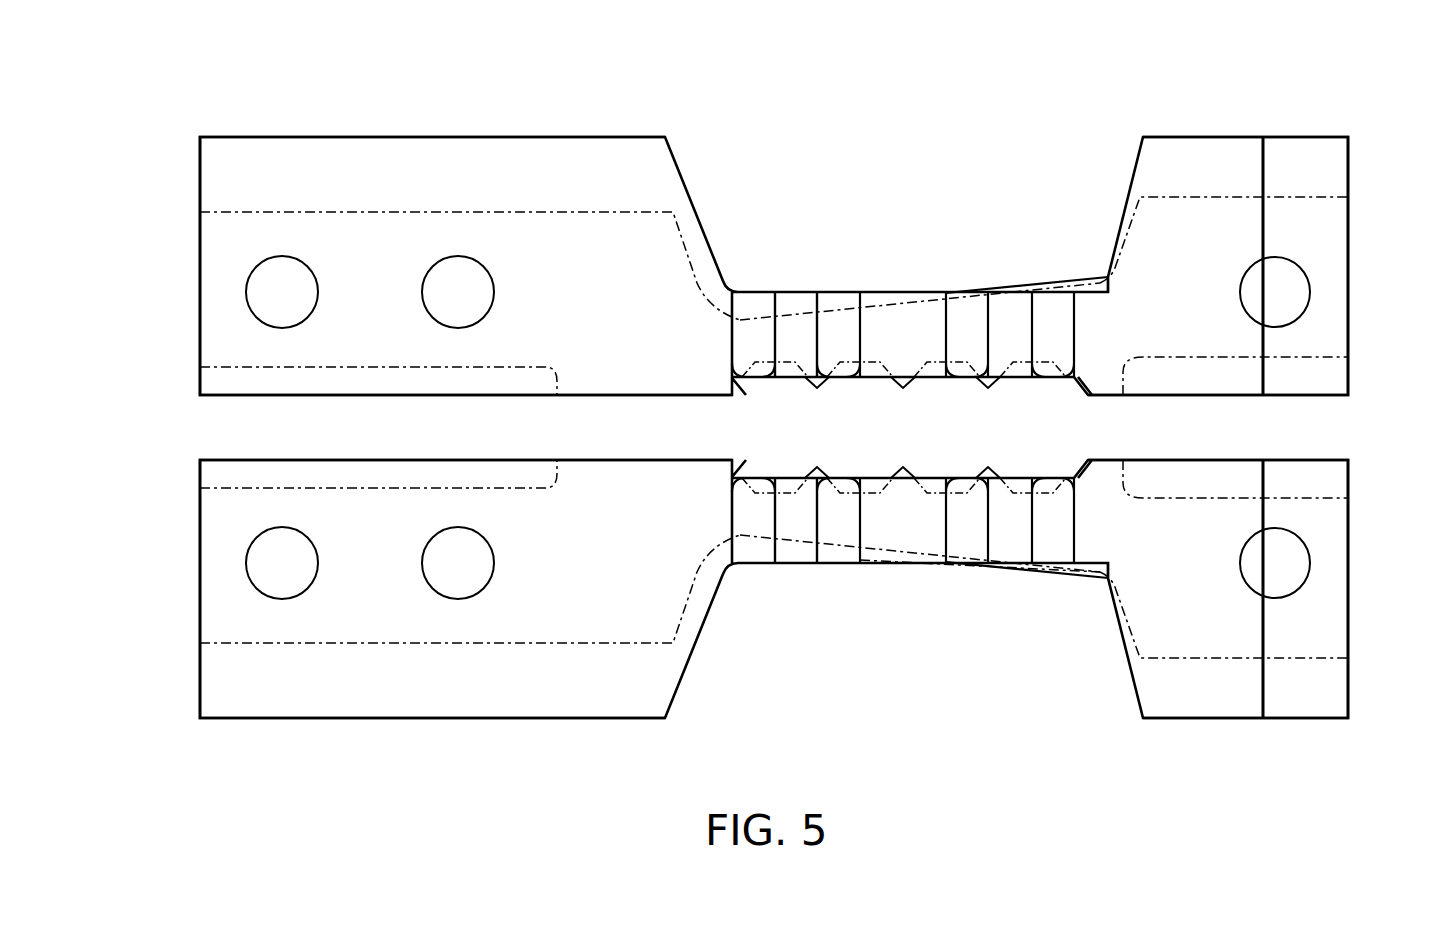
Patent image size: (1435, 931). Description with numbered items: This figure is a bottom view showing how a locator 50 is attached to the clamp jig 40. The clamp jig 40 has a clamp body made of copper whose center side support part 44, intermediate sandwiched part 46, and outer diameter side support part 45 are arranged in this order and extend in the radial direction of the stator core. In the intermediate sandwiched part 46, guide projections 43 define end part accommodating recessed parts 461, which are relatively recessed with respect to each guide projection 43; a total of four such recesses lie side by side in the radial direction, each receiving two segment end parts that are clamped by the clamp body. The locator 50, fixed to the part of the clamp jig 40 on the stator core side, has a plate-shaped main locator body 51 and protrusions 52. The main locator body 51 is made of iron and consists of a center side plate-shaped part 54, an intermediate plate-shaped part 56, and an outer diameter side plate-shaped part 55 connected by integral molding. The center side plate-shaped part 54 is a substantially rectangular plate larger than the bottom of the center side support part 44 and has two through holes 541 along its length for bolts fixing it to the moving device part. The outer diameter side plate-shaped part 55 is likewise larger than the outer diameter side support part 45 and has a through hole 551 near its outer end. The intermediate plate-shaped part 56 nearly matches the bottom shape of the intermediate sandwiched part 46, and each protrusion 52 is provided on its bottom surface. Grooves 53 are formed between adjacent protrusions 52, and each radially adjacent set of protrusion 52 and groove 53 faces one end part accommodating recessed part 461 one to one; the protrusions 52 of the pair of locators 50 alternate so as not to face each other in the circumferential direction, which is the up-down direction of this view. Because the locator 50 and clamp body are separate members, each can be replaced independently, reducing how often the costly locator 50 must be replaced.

The clamp jig 40 is at (178, 168).
The guide projection 43 is at (817, 466).
The center side support part 44 is at (366, 211).
The outer diameter side support part 45 is at (1185, 197).
The intermediate sandwiched part 46 is at (922, 292).
The end part accommodating recessed part 461 is at (950, 563).
The locator 50 is at (232, 92).
The main locator body 51 is at (1091, 269).
The protrusion 52 is at (752, 337).
The groove 53 is at (795, 337).
The center side plate-shaped part 54 is at (502, 155).
The through hole 541 is at (295, 307).
The outer diameter side plate-shaped part 55 is at (1243, 157).
The through hole 551 is at (1302, 293).
The intermediate plate-shaped part 56 is at (808, 292).